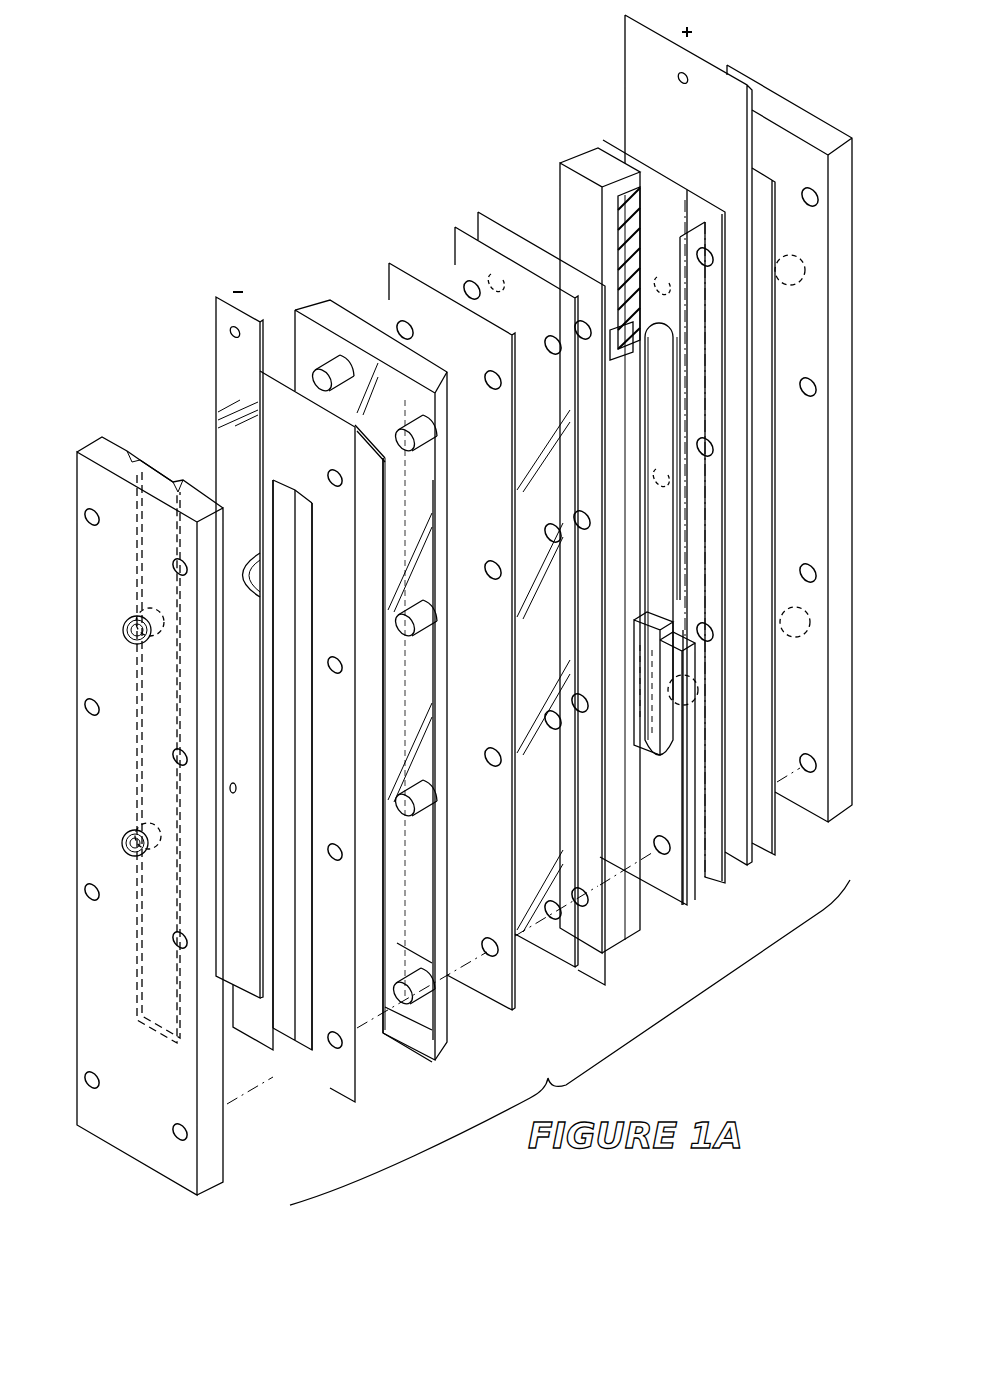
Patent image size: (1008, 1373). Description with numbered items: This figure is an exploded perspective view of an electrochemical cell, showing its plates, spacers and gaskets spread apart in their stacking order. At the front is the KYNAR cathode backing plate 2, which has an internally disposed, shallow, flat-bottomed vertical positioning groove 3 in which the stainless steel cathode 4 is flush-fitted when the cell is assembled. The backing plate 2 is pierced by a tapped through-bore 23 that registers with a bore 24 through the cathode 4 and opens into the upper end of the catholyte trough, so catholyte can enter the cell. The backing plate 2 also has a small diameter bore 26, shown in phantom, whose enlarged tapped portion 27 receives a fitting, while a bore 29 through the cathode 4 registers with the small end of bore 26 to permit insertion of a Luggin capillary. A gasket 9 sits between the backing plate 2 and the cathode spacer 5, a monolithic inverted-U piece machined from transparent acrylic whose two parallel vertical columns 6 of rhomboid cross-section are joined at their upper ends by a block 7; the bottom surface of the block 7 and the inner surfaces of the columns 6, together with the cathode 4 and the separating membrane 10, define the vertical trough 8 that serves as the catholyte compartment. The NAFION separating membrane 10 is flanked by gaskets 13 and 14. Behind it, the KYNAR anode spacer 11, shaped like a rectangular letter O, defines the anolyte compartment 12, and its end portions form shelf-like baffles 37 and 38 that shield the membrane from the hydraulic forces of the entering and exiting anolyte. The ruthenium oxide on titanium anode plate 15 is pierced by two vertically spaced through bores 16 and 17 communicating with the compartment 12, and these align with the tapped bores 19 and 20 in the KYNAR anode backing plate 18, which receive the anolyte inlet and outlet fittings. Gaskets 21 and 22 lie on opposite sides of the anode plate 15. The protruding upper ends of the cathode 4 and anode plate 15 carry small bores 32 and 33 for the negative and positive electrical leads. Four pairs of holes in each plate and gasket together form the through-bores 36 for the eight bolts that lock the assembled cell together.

The cathode backing plate 2 is at (120, 445).
The vertical positioning groove 3 is at (166, 480).
The cathode 4 is at (212, 378).
The cathode spacer 5 is at (298, 298).
The vertical columns 6 is at (298, 958).
The block 7 is at (352, 372).
The vertical trough 8 is at (368, 838).
The gasket 9 is at (316, 1095).
The separating membrane 10 is at (448, 250).
The anode spacer 11 is at (555, 186).
The anolyte compartment 12 is at (632, 705).
The gasket 13 is at (384, 268).
The gasket 14 is at (474, 218).
The anode plate 15 is at (620, 62).
The through bore 16 is at (700, 690).
The through bore 17 is at (695, 340).
The anode backing plate 18 is at (818, 110).
The bore 19 is at (794, 600).
The bore 20 is at (797, 256).
The gasket 21 is at (720, 892).
The gasket 22 is at (760, 852).
The through-bore 23 is at (128, 618).
The bore 24 is at (242, 560).
The small diameter bore 26 is at (163, 868).
The enlarged portion 27 is at (127, 833).
The bore 29 is at (234, 784).
The small bore 32 is at (230, 332).
The small bore 33 is at (687, 73).
The through-bores 36 is at (174, 757).
The shelf-like baffle 37 is at (622, 745).
The shelf-like baffle 38 is at (610, 345).